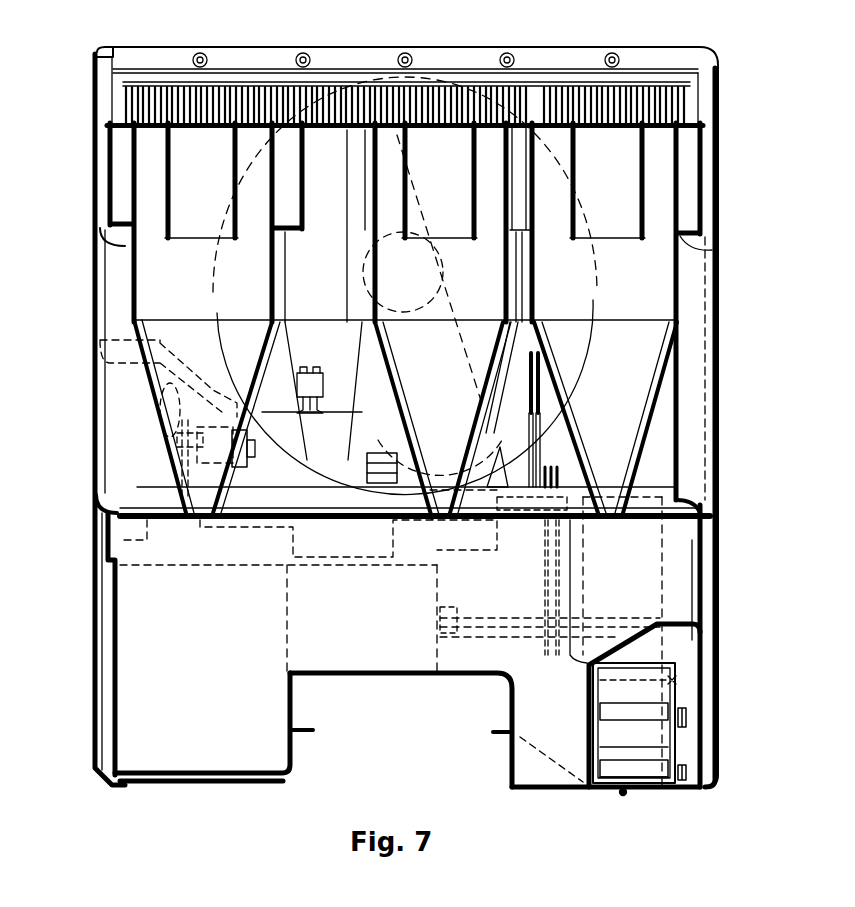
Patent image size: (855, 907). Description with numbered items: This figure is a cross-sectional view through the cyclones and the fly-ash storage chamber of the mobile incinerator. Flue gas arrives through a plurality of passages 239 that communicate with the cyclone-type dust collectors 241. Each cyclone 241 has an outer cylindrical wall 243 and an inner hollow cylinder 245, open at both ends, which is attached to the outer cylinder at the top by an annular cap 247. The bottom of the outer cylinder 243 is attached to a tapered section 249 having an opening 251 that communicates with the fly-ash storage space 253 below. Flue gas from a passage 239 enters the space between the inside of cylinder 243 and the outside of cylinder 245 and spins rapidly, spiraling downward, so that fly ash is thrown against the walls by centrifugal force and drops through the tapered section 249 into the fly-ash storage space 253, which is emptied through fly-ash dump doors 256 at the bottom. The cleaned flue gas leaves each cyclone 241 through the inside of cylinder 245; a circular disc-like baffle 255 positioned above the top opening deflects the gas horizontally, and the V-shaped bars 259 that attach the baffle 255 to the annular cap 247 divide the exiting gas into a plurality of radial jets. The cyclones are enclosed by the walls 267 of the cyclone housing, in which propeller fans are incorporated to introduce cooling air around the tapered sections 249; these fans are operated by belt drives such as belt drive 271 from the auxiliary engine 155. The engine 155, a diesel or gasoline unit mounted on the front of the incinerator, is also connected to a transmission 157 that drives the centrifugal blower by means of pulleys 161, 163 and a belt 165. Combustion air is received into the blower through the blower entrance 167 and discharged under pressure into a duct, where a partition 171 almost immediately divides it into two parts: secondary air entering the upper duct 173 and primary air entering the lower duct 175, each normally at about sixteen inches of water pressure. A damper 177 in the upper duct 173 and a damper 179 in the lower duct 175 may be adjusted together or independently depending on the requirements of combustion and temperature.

The engine 155 is at (288, 459).
The transmission 157 is at (400, 457).
The pulley 161 is at (567, 450).
The pulley 163 is at (543, 655).
The belt 165 is at (543, 560).
The blower entrance 167 is at (673, 680).
The partition 171 is at (643, 746).
The upper duct 173 is at (694, 660).
The lower duct 175 is at (670, 757).
The damper 177 is at (643, 703).
The damper 179 is at (650, 770).
The passage 239 is at (107, 203).
The cyclone-type dust collector 241 is at (275, 273).
The outer cylindrical wall 243 is at (372, 240).
The inner hollow cylinder 245 is at (168, 210).
The annular cap 247 is at (160, 128).
The tapered section 249 is at (268, 332).
The opening 251 is at (203, 513).
The fly-ash storage space 253 is at (255, 760).
The baffle 255 is at (620, 90).
The fly-ash dump door 256 is at (213, 785).
The V-shaped bar 259 is at (445, 92).
The cyclone housing wall 267 is at (94, 163).
The belt drive 271 is at (468, 385).